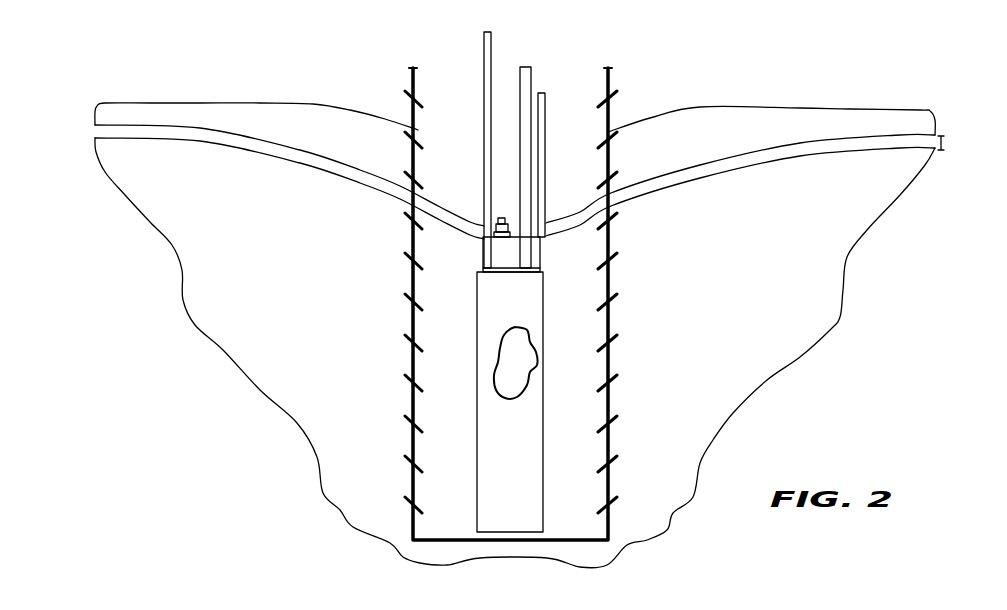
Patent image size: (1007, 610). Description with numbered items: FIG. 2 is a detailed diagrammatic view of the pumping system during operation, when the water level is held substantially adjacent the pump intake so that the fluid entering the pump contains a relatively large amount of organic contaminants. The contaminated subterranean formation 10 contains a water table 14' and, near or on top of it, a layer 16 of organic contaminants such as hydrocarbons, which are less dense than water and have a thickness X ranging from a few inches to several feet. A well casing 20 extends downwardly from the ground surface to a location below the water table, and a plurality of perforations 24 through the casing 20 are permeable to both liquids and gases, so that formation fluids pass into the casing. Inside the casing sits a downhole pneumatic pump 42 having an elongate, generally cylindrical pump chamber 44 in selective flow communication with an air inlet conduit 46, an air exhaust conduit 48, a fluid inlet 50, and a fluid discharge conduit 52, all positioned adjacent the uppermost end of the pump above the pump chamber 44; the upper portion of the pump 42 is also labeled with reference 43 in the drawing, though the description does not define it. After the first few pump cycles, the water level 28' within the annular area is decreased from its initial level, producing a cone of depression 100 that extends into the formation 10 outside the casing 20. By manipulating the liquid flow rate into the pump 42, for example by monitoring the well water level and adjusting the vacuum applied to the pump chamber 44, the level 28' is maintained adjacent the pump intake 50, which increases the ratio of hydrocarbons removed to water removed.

The contaminated subterranean formation 10 is at (207, 253).
The water table 14' is at (515, 103).
The layer of organic contaminants 16 is at (820, 143).
The well casing 20 is at (511, 304).
The perforations 24 is at (413, 422).
The water level 28' is at (740, 178).
The downhole pneumatic pump 42 is at (466, 297).
The container cap 43 is at (545, 305).
The pump chamber 44 is at (518, 368).
The air inlet conduit 46 is at (483, 80).
The air exhaust conduit 48 is at (547, 120).
The fluid inlet 50 is at (498, 215).
The fluid discharge conduit 52 is at (534, 78).
The cone of depression 100 is at (511, 282).
The thickness X is at (944, 143).